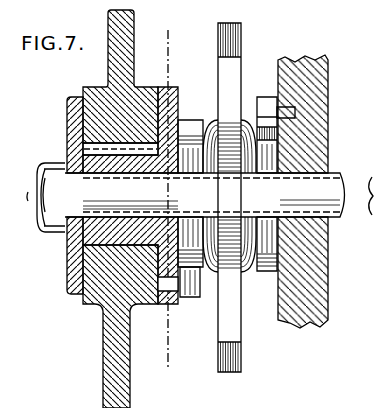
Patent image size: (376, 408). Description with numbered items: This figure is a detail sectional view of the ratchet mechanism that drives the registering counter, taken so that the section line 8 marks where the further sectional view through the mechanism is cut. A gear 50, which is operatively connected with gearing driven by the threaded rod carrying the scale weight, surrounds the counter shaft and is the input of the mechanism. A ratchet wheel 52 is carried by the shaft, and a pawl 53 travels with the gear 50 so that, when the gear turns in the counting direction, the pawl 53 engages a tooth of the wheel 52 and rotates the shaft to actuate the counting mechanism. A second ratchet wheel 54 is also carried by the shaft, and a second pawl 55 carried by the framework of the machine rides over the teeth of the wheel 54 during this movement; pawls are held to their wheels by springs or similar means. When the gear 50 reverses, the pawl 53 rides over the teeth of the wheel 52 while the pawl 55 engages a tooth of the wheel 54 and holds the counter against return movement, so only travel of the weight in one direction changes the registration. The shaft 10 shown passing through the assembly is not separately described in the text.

The section line 8— 8 is at (200, 367).
The shaft 10 is at (320, 183).
The gear 50 is at (110, 359).
The ratchet wheel 52 is at (190, 125).
The pawl 53 is at (191, 298).
The second ratchet wheel 54 is at (267, 262).
The second pawl 55 is at (265, 105).